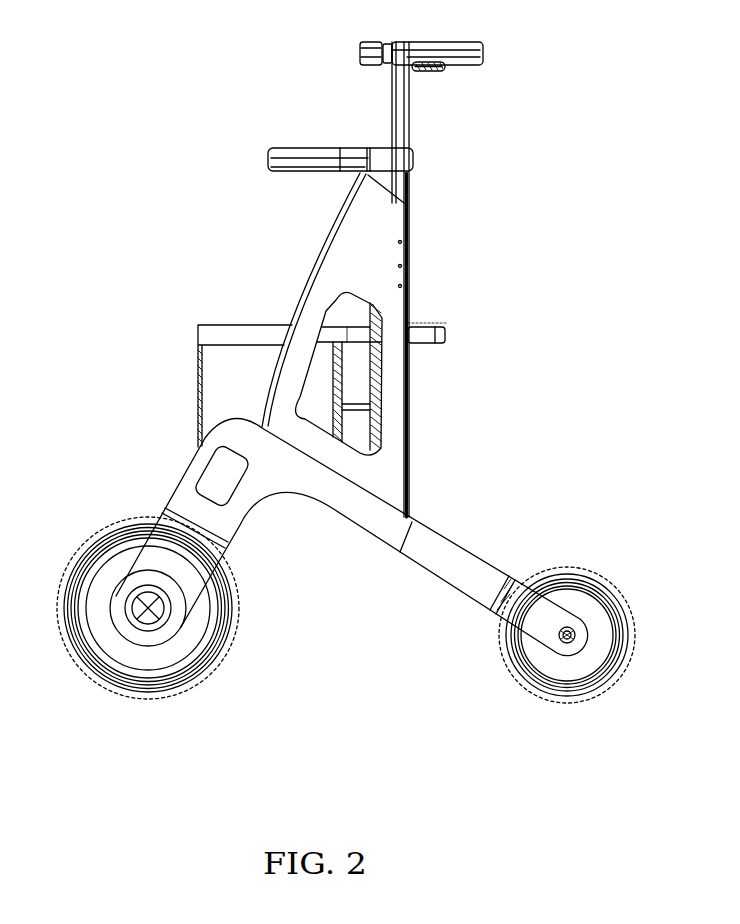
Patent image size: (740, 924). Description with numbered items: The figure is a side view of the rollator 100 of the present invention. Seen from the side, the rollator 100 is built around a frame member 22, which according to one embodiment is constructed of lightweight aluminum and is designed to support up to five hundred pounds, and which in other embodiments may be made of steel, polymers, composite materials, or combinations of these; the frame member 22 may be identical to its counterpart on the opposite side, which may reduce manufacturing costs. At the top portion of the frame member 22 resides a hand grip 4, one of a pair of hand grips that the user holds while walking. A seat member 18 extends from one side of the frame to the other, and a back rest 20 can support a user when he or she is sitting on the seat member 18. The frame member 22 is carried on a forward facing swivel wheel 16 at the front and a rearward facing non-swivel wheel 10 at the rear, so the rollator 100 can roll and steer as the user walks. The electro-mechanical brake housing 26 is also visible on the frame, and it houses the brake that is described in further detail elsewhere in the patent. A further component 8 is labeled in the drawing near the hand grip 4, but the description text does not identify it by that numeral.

The rollator 100 is at (267, 22).
The hand grip 4 is at (463, 43).
The brake lever 8 is at (432, 77).
The back rest 20 is at (282, 146).
The frame member 22 is at (393, 455).
The seat member 18 is at (293, 322).
The electro-mechanical brake housing 26 is at (447, 555).
The forward facing swivel wheel 16 is at (165, 700).
The rearward facing non-swivel wheel 10 is at (543, 568).